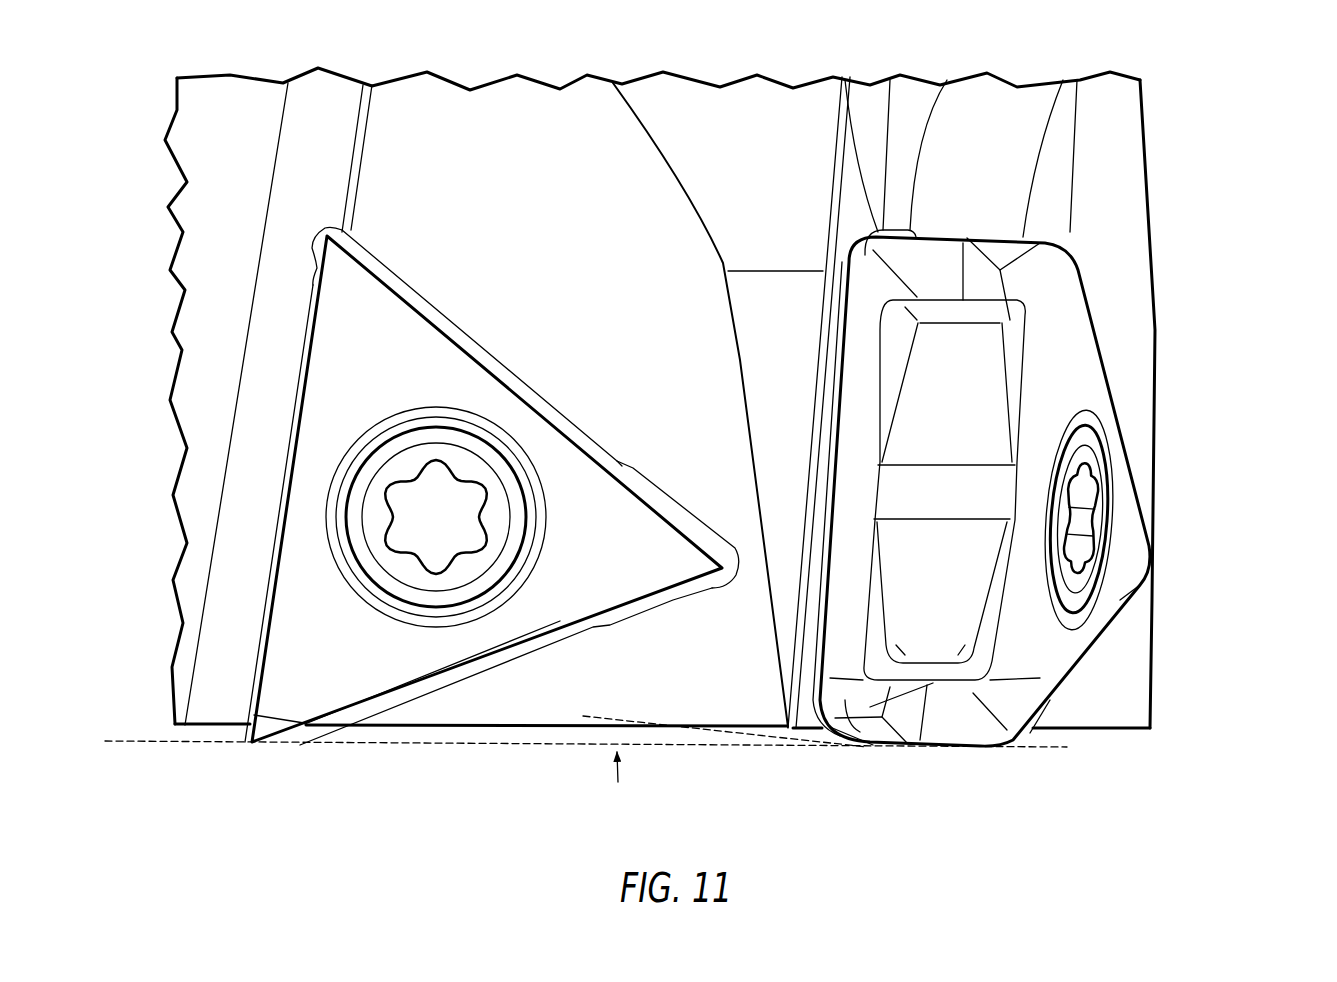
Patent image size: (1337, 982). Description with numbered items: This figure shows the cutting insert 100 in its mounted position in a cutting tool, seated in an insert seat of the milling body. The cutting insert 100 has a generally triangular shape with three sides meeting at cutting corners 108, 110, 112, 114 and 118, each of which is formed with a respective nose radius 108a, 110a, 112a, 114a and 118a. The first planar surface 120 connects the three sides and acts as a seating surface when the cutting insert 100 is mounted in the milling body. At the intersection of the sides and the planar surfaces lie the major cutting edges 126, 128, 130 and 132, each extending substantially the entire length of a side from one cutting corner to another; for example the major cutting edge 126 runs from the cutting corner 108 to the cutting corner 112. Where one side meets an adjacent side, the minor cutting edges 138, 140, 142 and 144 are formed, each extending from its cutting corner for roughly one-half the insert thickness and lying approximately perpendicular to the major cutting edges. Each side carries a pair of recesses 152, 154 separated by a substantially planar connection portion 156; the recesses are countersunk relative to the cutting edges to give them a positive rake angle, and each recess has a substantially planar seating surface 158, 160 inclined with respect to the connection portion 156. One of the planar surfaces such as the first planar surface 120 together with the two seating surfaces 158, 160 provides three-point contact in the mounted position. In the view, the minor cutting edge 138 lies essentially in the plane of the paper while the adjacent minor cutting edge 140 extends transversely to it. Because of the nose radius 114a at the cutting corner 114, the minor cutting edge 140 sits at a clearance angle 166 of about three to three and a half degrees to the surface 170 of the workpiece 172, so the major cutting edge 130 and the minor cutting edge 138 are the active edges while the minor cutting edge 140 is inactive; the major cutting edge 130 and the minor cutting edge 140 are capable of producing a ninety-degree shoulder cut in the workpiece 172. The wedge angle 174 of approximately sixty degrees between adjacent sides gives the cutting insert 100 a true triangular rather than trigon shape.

The cutting insert 100 is at (258, 423).
The cutting corner 108 is at (244, 752).
The nose radius 108a is at (264, 730).
The cutting corner 110 is at (730, 532).
The nose radius 110a is at (700, 552).
The cutting corner 112 is at (320, 226).
The nose radius 112a is at (322, 298).
The cutting corner 114 is at (807, 737).
The nose radius 114a is at (843, 733).
The cutting corner 118 is at (865, 232).
The nose radius 118a is at (845, 80).
The first planar surface 120 is at (367, 657).
The major cutting edge 126 is at (285, 517).
The major cutting edge 128 is at (488, 368).
The major cutting edge 130 is at (497, 657).
The major cutting edge 132 is at (833, 567).
The minor cutting edge 138 is at (960, 748).
The minor cutting edge 140 is at (852, 737).
The minor cutting edge 142 is at (1063, 80).
The minor cutting edge 144 is at (947, 80).
The recess 152 is at (980, 659).
The recess 154 is at (1003, 333).
The connection portion 156 is at (983, 500).
The seating surface 158 is at (1128, 600).
The seating surface 160 is at (970, 393).
The clearance angle 166 is at (619, 716).
The surface of the workpiece 170 is at (455, 744).
The workpiece 172 is at (490, 819).
The wedge angle 174 is at (343, 707).